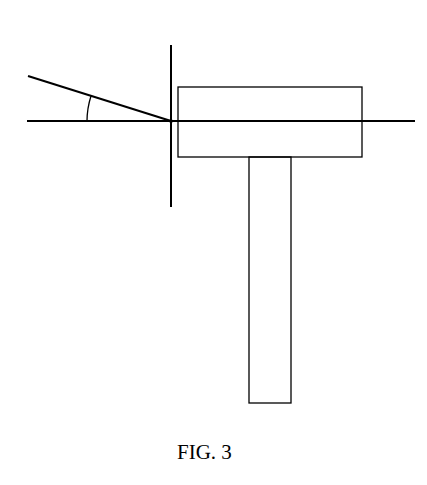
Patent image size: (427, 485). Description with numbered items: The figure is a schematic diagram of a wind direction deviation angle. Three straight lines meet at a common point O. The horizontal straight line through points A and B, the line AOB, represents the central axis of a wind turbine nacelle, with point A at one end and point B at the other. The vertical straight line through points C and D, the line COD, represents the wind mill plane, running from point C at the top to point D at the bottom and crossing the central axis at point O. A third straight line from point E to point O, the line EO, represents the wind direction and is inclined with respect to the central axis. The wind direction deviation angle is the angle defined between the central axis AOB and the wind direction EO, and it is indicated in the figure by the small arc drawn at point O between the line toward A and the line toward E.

The point A of central axis AOB A is at (97, 137).
The point B of central axis AOB B is at (293, 136).
The point C of wind mill plane COD C is at (174, 72).
The point D of wind mill plane COD D is at (174, 177).
The point E of wind direction line EO E is at (90, 91).
The point O (intersection point) O is at (162, 133).